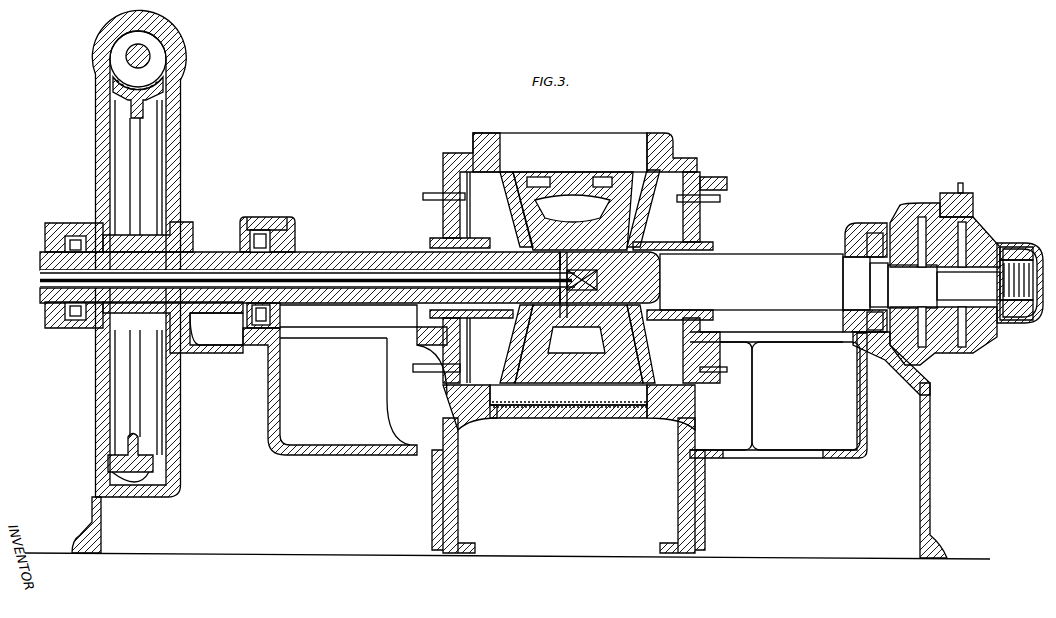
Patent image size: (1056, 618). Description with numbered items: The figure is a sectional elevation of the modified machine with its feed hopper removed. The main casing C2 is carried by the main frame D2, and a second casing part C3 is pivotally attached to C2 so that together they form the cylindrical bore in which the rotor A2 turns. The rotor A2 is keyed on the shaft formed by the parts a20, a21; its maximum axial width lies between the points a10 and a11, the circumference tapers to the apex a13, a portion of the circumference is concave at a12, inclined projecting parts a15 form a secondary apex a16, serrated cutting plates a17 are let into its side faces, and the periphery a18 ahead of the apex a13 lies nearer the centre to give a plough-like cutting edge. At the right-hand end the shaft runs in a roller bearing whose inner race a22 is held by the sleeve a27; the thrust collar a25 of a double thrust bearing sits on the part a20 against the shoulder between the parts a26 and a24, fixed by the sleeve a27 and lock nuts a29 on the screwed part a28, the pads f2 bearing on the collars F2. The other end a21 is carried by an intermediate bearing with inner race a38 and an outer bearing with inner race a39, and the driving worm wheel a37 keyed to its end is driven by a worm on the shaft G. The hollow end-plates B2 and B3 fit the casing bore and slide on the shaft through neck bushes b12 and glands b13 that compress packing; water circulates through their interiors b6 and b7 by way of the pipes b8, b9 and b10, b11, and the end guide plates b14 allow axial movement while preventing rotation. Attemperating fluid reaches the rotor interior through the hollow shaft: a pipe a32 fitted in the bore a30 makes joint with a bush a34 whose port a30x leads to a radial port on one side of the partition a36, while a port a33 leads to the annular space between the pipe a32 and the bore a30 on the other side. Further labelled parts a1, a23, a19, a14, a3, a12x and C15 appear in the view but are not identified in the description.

The worm shaft G is at (126, 57).
The standard head bore a1 is at (152, 47).
The thrust collar a25 is at (182, 78).
The driving worm wheel a37 is at (142, 110).
The bearing cap a23 is at (52, 224).
The shaft part a21 is at (75, 238).
The inner race a22 is at (112, 236).
The secondary apex a16 is at (255, 222).
The periphery portion a18 is at (250, 235).
The serrated cutting plates a17 is at (280, 222).
The lower bearing a19 is at (293, 240).
The inner race a38 is at (242, 248).
The bore a30 is at (378, 275).
The port a30x is at (662, 288).
The inner race a39 is at (58, 327).
The shaft part a20 is at (74, 322).
The point of maximum axial dimension a11 is at (275, 398).
The pipe a32 is at (325, 310).
The cover C15 is at (555, 140).
The end-plate B3 is at (478, 148).
The glands b13 is at (415, 320).
The end-plate interior b6 is at (490, 185).
The circulating pipe b9 is at (432, 196).
The circulating pipe b8 is at (425, 367).
The end guide plates b14 is at (350, 252).
The cone band a14 is at (855, 256).
The rotor A2 is at (590, 166).
The partition a36 is at (572, 208).
The port a33 is at (579, 344).
The bush a34 is at (563, 252).
The key a3 is at (582, 270).
The apex a13 is at (560, 356).
The casing part C3 is at (662, 140).
The end-plate B2 is at (690, 163).
The circulating pipe b11 is at (705, 198).
The end-plate interior b7 is at (692, 222).
The neck bushes b12 is at (650, 341).
The circulating pipe b10 is at (712, 378).
The point of maximum axial dimension a10 is at (857, 400).
The main casing part C2 is at (460, 400).
The main frame D2 is at (458, 481).
The inclined projecting parts a15 is at (848, 238).
The shaft part a24 is at (890, 283).
The shaft part a26 is at (968, 285).
The screwed part a28 is at (1012, 262).
The lock nuts a29 is at (1022, 327).
The concave portion a12 is at (907, 215).
The sleeve a27 is at (995, 350).
The pads f2 is at (950, 205).
The cone hub face a12x is at (975, 225).
The collars F2 is at (987, 237).